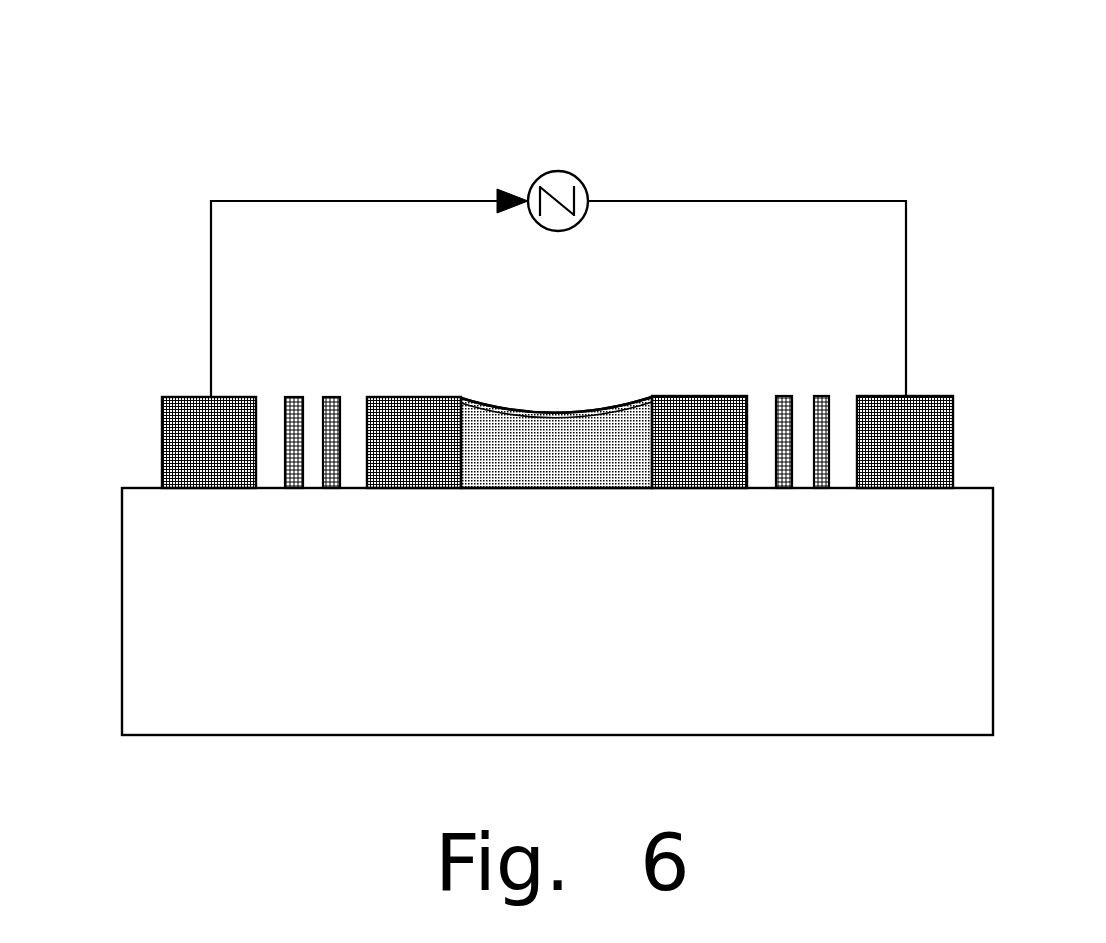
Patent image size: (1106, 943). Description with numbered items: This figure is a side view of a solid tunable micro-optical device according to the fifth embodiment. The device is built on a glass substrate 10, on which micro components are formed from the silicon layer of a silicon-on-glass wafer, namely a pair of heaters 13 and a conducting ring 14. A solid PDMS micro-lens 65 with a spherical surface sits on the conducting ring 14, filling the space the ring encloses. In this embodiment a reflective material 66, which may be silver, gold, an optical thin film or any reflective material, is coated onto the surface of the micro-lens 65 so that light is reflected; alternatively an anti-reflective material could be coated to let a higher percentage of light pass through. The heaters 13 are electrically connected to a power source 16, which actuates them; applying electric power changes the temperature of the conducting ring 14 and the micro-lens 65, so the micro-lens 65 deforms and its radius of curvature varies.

The glass substrate 10 is at (973, 598).
The heaters 13 is at (298, 405).
The conducting ring 14 is at (372, 427).
The power source 16 is at (573, 172).
The micro-lens 65 is at (581, 447).
The reflective material 66 is at (482, 406).